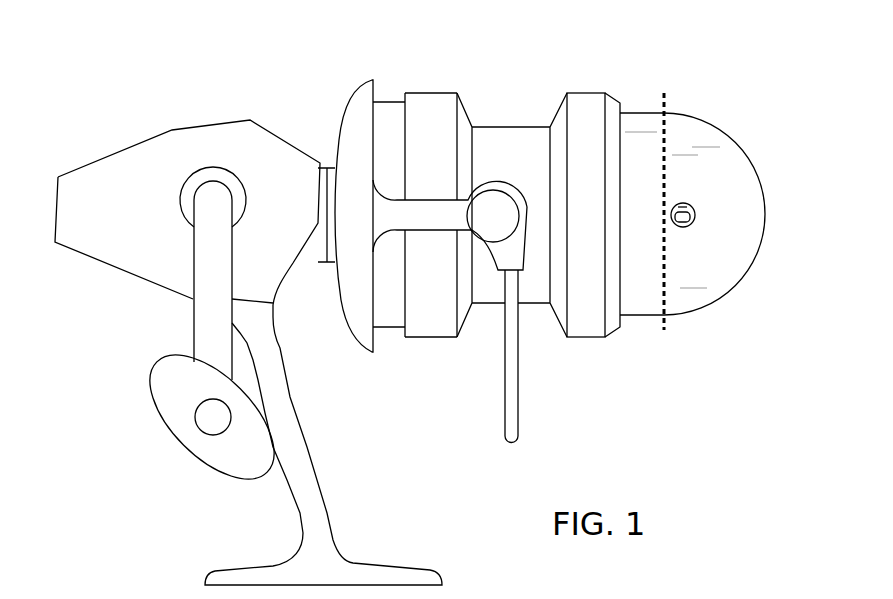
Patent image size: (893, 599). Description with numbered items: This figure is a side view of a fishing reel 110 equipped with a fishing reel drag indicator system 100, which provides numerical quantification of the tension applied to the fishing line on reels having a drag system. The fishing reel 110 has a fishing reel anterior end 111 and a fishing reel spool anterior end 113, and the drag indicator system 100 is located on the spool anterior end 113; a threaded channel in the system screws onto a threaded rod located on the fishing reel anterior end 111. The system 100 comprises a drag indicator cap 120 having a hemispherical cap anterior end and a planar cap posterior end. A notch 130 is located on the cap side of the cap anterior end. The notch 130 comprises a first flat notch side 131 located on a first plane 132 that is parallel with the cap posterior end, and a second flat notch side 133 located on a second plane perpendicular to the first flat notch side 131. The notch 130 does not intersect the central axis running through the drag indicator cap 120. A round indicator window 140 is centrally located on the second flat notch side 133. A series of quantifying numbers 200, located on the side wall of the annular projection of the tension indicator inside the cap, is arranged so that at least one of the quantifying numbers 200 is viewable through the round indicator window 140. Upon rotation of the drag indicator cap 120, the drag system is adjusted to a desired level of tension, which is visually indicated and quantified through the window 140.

The fishing reel drag indicator system 100 is at (748, 209).
The fishing reel 110 is at (374, 305).
The fishing reel anterior end 111 is at (583, 337).
The fishing reel spool anterior end 113 is at (615, 330).
The drag indicator cap 120 is at (722, 297).
The notch 130 is at (695, 273).
The first flat notch side 131 is at (664, 205).
The first plane 132 is at (665, 93).
The second flat notch side 133 is at (735, 260).
The round indicator window 140 is at (695, 212).
The series of quantifying numbers 200 is at (695, 223).